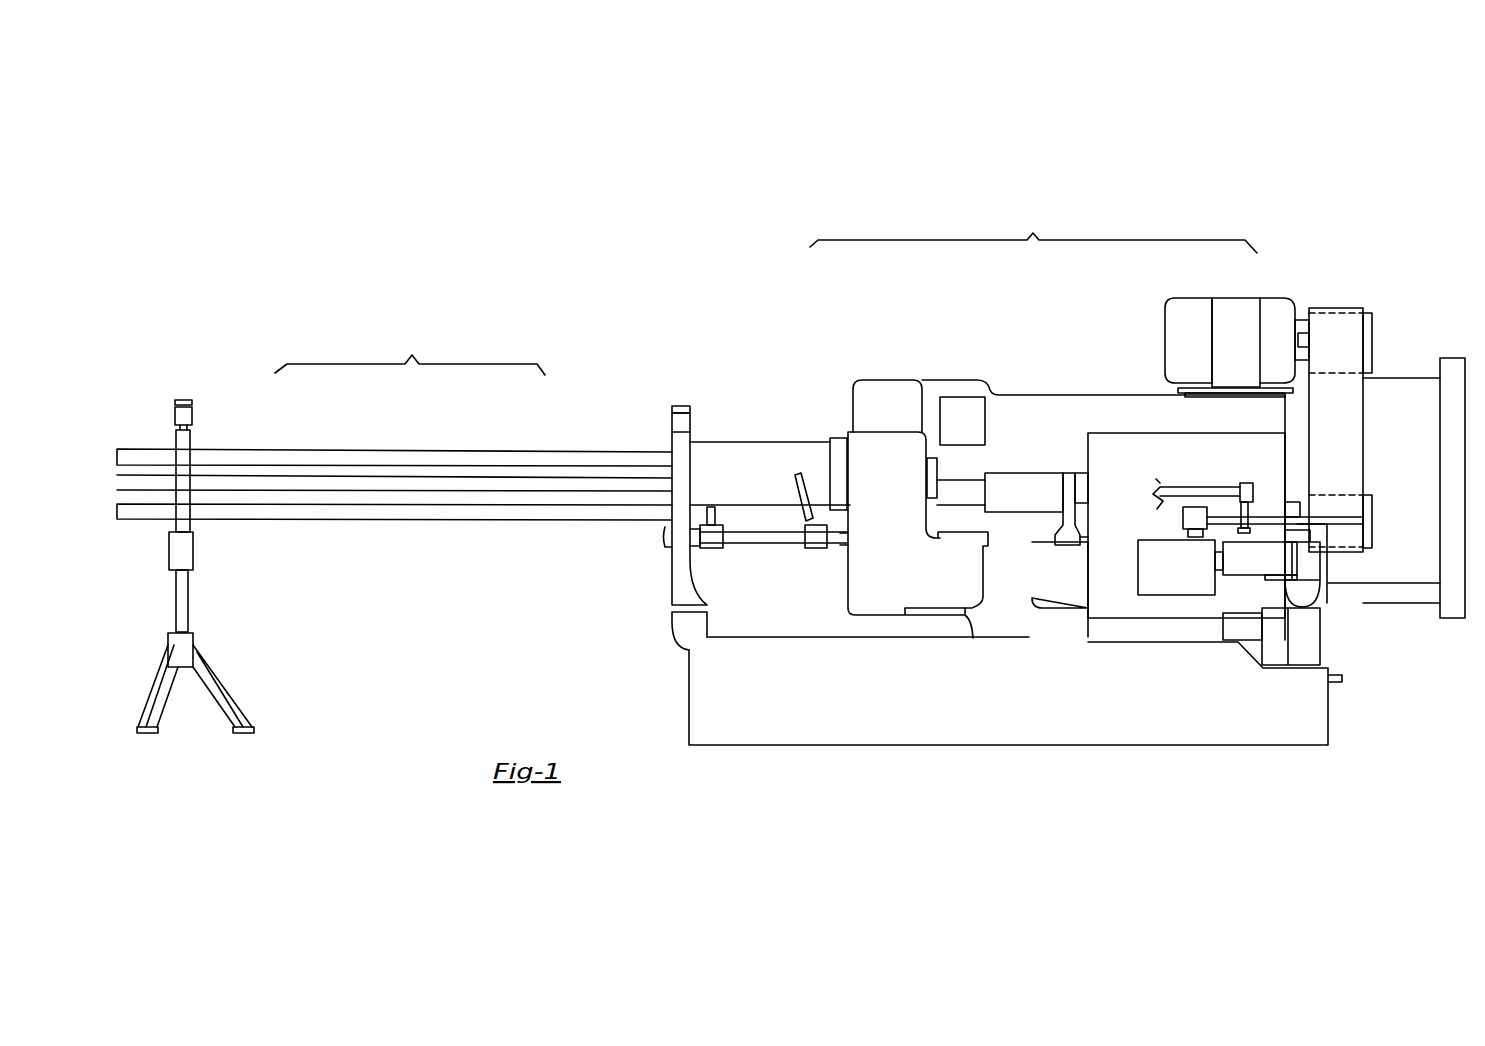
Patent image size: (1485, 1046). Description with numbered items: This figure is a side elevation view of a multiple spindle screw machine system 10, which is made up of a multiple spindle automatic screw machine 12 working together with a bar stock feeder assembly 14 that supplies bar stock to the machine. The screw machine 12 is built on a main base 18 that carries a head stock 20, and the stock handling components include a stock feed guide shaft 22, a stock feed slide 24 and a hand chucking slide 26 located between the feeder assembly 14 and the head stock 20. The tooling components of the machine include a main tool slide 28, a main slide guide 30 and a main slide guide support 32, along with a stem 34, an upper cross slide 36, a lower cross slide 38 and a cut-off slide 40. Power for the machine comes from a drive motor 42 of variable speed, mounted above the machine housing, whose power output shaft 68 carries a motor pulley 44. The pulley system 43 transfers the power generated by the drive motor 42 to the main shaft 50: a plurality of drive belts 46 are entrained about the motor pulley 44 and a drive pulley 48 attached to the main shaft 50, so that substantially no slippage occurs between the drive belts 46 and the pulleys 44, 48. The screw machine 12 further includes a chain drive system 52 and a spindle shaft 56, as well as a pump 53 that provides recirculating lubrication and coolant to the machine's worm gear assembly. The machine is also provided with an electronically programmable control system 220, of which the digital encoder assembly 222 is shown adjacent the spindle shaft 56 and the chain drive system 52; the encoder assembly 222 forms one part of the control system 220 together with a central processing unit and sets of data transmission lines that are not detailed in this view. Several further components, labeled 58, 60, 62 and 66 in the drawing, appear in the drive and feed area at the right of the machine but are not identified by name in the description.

The multiple spindle screw machine system 10 is at (318, 252).
The multiple spindle automatic screw machine 12 is at (1033, 229).
The bar stock feeder assembly 14 is at (412, 530).
The main base 18 is at (718, 707).
The head stock 20 is at (885, 588).
The stock feed guide shaft 22 is at (773, 540).
The stock feed slide 24 is at (722, 547).
The hand chucking slide 26 is at (815, 547).
The main tool slide 28 is at (1032, 493).
The main slide guide 30 is at (1068, 495).
The main slide guide support 32 is at (1062, 573).
The stem 34 is at (1082, 500).
The upper cross slide 36 is at (960, 422).
The lower cross slide 38 is at (950, 540).
The cut-off slide 40 is at (933, 470).
The drive motor 42 is at (1183, 313).
The pulley system 43 is at (1368, 411).
The motor pulley 44 is at (1309, 313).
The drive belts 46 is at (1343, 308).
The drive pulley 48 is at (1350, 540).
The main shaft 50 is at (1268, 518).
The chain drive system 52 is at (1246, 480).
The pump 53 is at (1320, 640).
The spindle shaft 56 is at (1218, 490).
The feed housing 58 is at (1243, 562).
The spacer 60 is at (1220, 557).
The feed motor 62 is at (1177, 590).
The frame member 66 is at (1393, 378).
The power output shaft 68 is at (1303, 340).
The electronically programmable control system 220 is at (1452, 370).
The digital encoder assembly 222 is at (1190, 507).